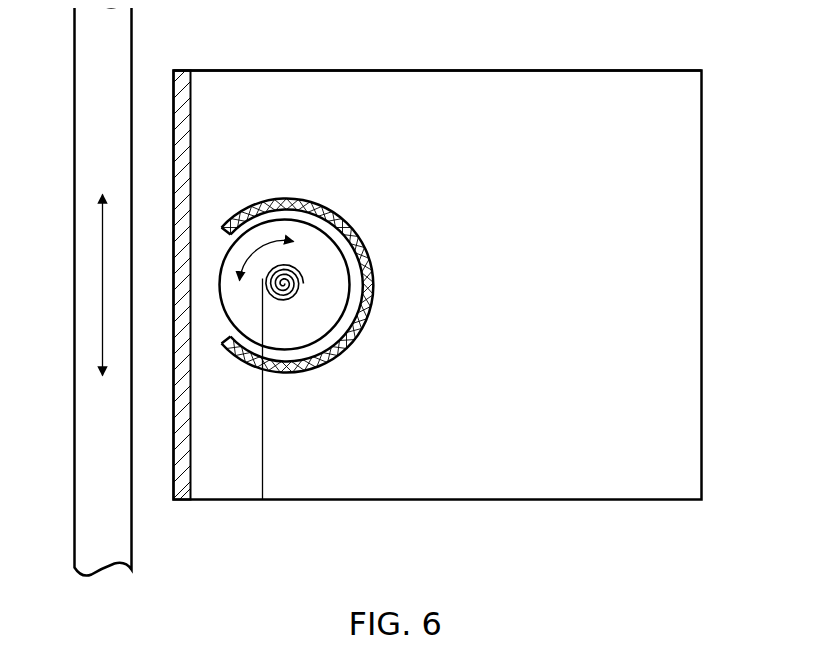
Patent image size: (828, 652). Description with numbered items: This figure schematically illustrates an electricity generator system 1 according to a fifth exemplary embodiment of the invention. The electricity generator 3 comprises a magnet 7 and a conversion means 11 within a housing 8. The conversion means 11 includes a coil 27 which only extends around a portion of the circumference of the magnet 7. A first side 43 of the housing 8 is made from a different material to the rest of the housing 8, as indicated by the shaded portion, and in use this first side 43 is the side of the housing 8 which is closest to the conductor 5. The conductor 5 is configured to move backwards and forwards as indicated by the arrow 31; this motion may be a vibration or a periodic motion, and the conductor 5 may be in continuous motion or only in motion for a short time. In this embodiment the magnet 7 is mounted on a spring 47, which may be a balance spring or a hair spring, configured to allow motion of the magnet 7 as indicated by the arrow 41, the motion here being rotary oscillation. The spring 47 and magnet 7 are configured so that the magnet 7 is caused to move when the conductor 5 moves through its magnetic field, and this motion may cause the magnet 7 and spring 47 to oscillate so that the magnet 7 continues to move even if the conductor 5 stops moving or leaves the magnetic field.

The electricity generator system 1 is at (293, 522).
The electricity generator 3 is at (701, 213).
The conductor 5 is at (73, 138).
The magnet 7 is at (350, 270).
The housing 8 is at (410, 67).
The conversion means 11 is at (315, 200).
The coil 27 is at (318, 366).
The arrow 31 is at (101, 300).
The arrow 41 is at (263, 240).
The first side 43 is at (179, 67).
The spring 47 is at (262, 470).